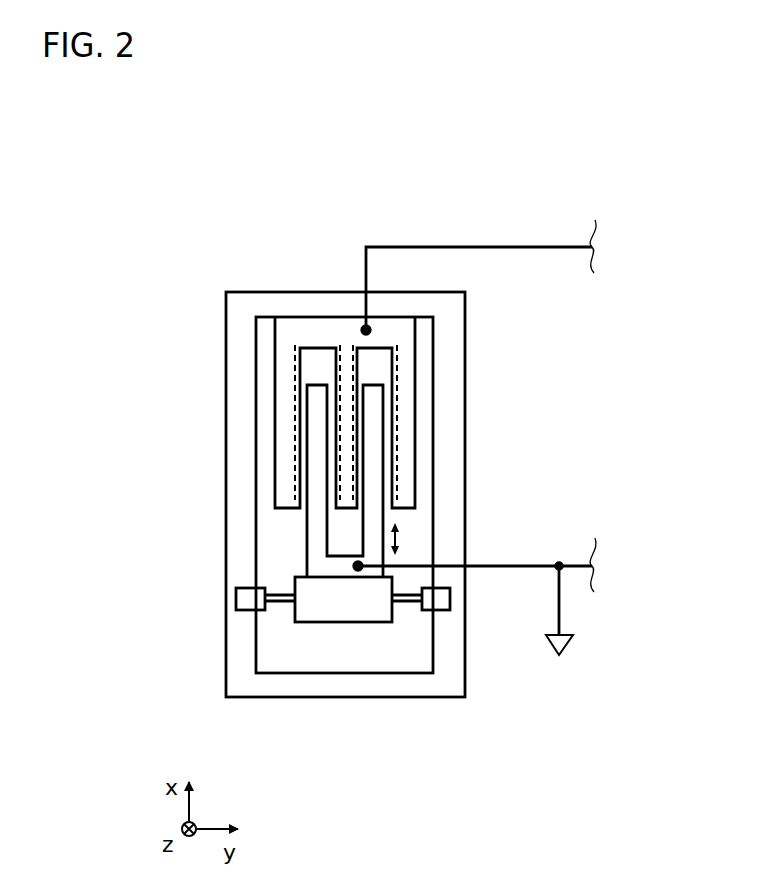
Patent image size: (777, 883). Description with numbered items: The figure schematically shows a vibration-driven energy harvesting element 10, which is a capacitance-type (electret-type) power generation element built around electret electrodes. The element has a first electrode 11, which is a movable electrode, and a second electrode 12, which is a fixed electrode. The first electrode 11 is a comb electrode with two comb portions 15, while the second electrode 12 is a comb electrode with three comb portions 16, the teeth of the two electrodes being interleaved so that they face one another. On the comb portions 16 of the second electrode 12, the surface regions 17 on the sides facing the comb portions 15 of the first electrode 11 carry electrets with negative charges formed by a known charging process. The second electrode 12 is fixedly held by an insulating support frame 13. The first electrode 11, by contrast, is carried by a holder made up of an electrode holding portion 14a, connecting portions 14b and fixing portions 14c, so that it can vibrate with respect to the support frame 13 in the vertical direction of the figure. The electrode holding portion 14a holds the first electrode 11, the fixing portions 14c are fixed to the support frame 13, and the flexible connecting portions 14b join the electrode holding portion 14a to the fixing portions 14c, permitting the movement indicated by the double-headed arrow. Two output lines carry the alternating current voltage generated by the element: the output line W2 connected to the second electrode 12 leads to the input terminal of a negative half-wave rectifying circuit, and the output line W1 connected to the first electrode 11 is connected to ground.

The vibration-driven energy harvesting element 10 is at (238, 290).
The first electrode 11 is at (287, 414).
The second electrode 12 is at (333, 332).
The support frame 13 is at (235, 466).
The electrode holding portion 14a is at (345, 607).
The connecting portions 14b is at (280, 602).
The fixing portions 14c is at (240, 602).
The comb portions 15 is at (315, 517).
The comb portions 16 is at (283, 426).
The surface regions 17 is at (297, 370).
The output line W1 is at (518, 565).
The output line W2 is at (480, 245).